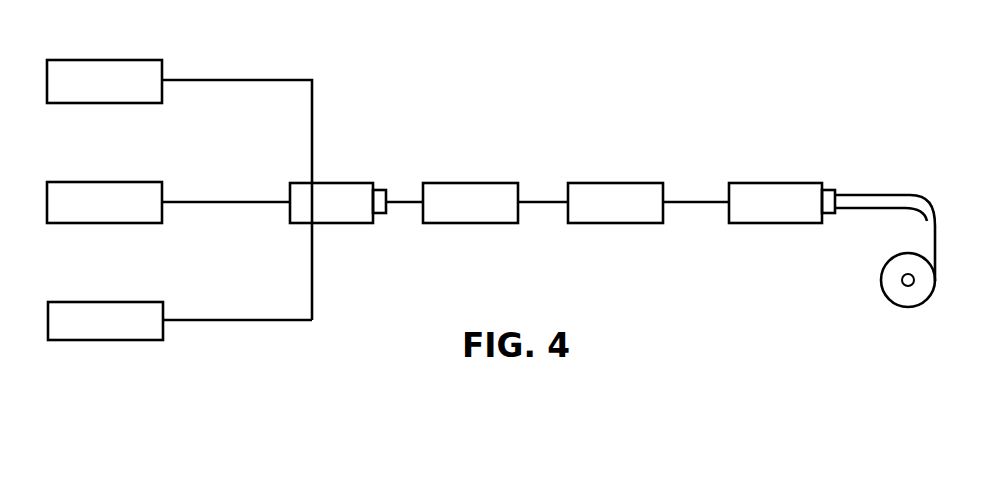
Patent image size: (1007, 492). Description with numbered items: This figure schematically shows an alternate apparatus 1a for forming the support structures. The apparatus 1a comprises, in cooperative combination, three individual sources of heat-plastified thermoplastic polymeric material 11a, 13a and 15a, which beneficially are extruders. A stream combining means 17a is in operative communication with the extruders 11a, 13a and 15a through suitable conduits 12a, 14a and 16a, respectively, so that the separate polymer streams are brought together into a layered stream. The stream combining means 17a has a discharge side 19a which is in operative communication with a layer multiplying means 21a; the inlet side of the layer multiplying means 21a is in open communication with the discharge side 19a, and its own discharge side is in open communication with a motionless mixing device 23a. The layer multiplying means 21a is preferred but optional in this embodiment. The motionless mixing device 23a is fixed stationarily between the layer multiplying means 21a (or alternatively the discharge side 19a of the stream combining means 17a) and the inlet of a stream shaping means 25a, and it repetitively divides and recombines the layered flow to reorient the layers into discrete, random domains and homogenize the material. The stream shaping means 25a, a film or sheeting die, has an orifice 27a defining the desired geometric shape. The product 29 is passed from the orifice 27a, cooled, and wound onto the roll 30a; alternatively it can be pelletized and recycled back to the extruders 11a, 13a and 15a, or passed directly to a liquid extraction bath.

The apparatus 1a is at (431, 52).
The source of heat-plastified thermoplastic polymeric material 11a is at (127, 59).
The conduit 12a is at (246, 77).
The source of heat-plastified thermoplastic polymeric material 13a is at (127, 181).
The conduit 14a is at (248, 200).
The source of heat-plastified thermoplastic polymeric material 15a is at (130, 301).
The conduit 16a is at (257, 317).
The stream combining means 17a is at (352, 182).
The discharge side 19a is at (392, 189).
The layer multiplying means 21a is at (490, 182).
The motionless mixing device 23a is at (642, 182).
The stream shaping means 25a is at (798, 182).
The orifice 27a is at (845, 189).
The output optical fiber 29 is at (943, 206).
The roll 30a is at (913, 309).